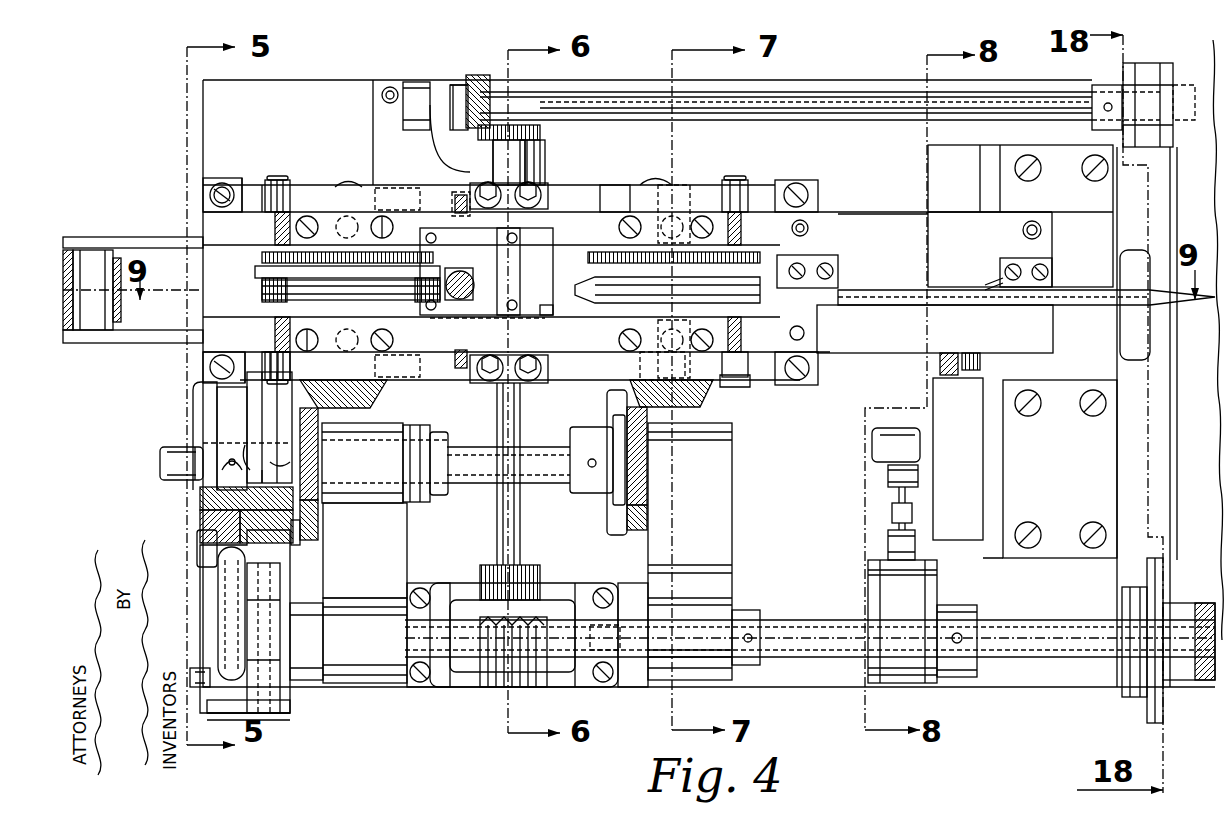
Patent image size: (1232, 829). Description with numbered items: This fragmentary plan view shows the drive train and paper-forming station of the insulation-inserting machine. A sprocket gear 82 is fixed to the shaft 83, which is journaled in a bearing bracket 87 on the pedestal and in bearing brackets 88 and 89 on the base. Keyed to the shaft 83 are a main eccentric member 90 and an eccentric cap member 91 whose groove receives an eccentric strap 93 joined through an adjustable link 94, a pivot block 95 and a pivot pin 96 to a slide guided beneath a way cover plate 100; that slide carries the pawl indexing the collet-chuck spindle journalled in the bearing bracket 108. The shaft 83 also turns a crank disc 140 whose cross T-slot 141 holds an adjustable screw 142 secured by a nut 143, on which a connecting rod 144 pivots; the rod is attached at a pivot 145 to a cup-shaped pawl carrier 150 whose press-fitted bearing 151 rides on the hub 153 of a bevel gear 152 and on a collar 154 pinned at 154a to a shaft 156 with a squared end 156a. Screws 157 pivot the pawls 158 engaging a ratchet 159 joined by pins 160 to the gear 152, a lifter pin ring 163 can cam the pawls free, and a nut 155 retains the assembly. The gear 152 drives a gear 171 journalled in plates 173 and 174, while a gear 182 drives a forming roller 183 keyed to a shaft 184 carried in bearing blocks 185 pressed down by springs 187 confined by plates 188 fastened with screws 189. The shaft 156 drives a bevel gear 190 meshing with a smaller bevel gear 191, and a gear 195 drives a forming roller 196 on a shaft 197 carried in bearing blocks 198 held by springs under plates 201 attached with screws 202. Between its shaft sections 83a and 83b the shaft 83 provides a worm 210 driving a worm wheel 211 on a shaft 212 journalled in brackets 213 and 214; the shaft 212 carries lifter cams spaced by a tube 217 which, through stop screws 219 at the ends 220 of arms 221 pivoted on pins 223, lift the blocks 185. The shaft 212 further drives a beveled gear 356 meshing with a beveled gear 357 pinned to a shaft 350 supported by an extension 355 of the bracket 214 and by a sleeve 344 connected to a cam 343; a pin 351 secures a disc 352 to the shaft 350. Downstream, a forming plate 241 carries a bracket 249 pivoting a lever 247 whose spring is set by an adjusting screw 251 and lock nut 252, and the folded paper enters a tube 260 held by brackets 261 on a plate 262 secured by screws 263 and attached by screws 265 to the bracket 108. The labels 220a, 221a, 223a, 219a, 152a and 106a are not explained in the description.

The extension 355 is at (425, 85).
The beveled gear 357 is at (478, 75).
The beveled gear 356 is at (540, 132).
The bracket 214 is at (541, 175).
The nut 220a is at (532, 383).
The ends of arms 220 is at (487, 383).
The tube 217 is at (548, 380).
The arms 221 is at (457, 372).
The springs 187 is at (382, 360).
The plates 188 is at (395, 340).
The pins 223 is at (282, 385).
The screws 189 is at (310, 215).
The shaft 184 is at (410, 390).
The plate 173 is at (200, 215).
The gear 182 is at (262, 258).
The forming roller 183 is at (262, 290).
The plate 174 is at (200, 322).
The pawl carrier 150 is at (305, 555).
The bearing blocks 185 is at (292, 365).
The gear 171 is at (355, 395).
The bevel gear 152 is at (322, 525).
The ratchet 159 is at (272, 445).
The pin 152a is at (250, 450).
The bearing 151 is at (262, 470).
The lifter pin ring 163 is at (203, 390).
The nut 155 is at (200, 530).
The shaft 156 is at (555, 485).
The squared end 156a is at (160, 462).
The pin 154a is at (233, 468).
The collar 154 is at (200, 490).
The hub 153 is at (200, 515).
The pivot 145 is at (200, 550).
The connecting rod 144 is at (218, 606).
The pawls 158 is at (286, 580).
The nut 143 is at (205, 668).
The crank disc 140 is at (285, 718).
The T-slot 141 is at (270, 720).
The adjustable screw 142 is at (300, 680).
The bearing bracket 89 is at (410, 500).
The pins 160 is at (338, 478).
The screws 157 is at (300, 545).
The shaft section 83b is at (430, 687).
The bracket 213 is at (585, 590).
The worm 210 is at (518, 687).
The shaft 212 is at (492, 523).
The stop screws 219 is at (508, 385).
The housing 219a is at (520, 230).
The bracket 249 is at (560, 232).
The adjusting screw 251 is at (458, 270).
The lock nut 252 is at (468, 278).
The gear 195 is at (588, 258).
The lever 247 is at (553, 318).
The forming plate 241 is at (553, 338).
The screws 202 is at (780, 333).
The plates 201 is at (750, 347).
The bearing blocks 198 is at (645, 368).
The shaft 197 is at (712, 360).
The block 223a is at (745, 388).
The block 221a is at (805, 385).
The forming roller 196 is at (765, 262).
The screws 263 is at (808, 229).
The brackets 261 is at (1015, 265).
The tube 260 is at (885, 305).
The plate 262 is at (895, 212).
The shaft 350 is at (887, 120).
The pin 351 is at (1100, 107).
The disc 352 is at (1123, 78).
The cam 343 is at (1150, 65).
The sleeve 344 is at (1198, 80).
The bearing bracket 108 is at (1113, 196).
The screws 265 is at (1043, 230).
The way cover plate 100 is at (933, 392).
The plate 106a is at (1125, 365).
The pivot pin 96 is at (868, 448).
The pivot block 95 is at (886, 478).
The adjustable link 94 is at (890, 511).
The eccentric strap 93 is at (888, 540).
The eccentric cap member 91 is at (868, 582).
The main eccentric member 90 is at (940, 585).
The shaft 83 is at (818, 660).
The shaft section 83a is at (632, 687).
The worm wheel 211 is at (605, 640).
The bearing bracket 88 is at (690, 687).
The bevel gear 190 is at (640, 520).
The bevel gear 191 is at (705, 392).
The sprocket gear 82 is at (1153, 723).
The bearing bracket 87 is at (1205, 688).